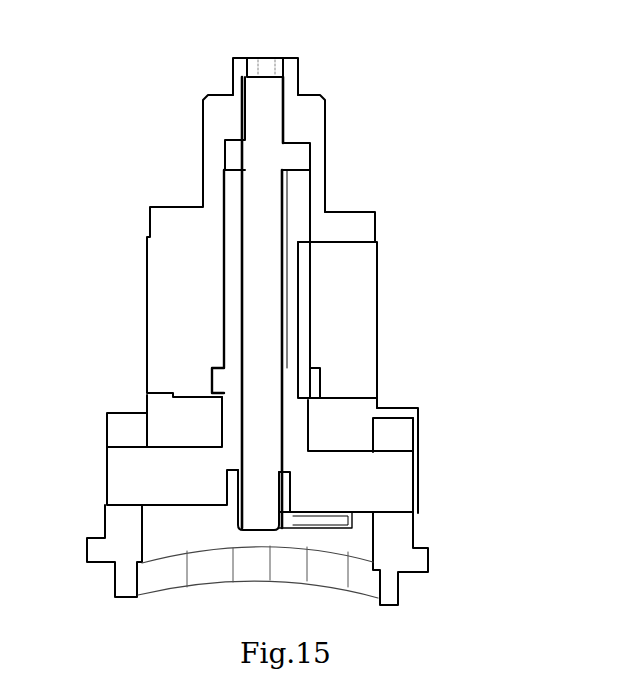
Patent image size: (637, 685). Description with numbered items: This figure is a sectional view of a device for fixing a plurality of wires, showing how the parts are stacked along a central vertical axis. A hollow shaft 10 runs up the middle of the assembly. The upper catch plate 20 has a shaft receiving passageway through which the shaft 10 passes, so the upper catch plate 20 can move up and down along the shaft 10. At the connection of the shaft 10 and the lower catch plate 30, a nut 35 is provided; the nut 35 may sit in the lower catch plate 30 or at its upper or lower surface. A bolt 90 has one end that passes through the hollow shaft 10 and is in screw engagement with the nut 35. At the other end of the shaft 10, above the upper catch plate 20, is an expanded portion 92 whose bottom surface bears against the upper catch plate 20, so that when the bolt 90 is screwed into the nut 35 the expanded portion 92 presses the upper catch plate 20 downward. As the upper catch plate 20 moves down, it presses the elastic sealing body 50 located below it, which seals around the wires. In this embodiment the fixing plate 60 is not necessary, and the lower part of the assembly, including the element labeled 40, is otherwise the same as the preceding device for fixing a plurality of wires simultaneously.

The shaft 10 is at (235, 303).
The upper catch plate 20 is at (345, 225).
The lower catch plate 30 is at (360, 485).
The nut 35 is at (232, 483).
The mounting flange 40 is at (415, 530).
The elastic sealing body 50 is at (353, 310).
The fixing plate 60 is at (342, 428).
The bolt 90 is at (292, 220).
The expanded portion 92 is at (288, 73).